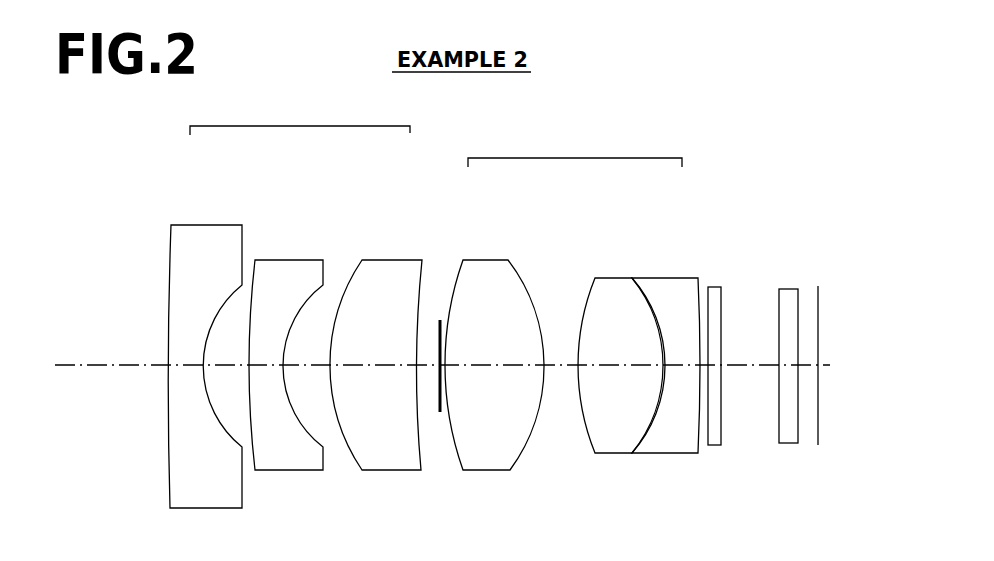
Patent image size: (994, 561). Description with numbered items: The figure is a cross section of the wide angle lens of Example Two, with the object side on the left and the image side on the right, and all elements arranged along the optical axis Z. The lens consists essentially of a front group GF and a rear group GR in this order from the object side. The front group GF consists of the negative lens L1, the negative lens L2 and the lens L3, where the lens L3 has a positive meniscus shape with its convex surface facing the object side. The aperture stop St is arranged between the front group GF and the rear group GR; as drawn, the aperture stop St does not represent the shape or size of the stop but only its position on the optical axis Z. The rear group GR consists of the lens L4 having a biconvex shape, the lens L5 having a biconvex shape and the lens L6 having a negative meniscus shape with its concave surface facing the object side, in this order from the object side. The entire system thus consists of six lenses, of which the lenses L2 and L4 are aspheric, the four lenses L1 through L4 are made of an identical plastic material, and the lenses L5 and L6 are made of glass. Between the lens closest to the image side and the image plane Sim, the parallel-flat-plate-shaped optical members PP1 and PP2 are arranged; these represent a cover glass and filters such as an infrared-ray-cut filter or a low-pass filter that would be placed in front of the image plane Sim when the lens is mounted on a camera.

The negative lens L1 is at (208, 235).
The negative lens L2 is at (290, 265).
The positive lens L3 is at (392, 267).
The lens L4 is at (487, 267).
The lens L5 is at (608, 285).
The lens L6 is at (663, 285).
The front group GF is at (300, 118).
The rear group GR is at (575, 152).
The aperture stop St is at (440, 322).
The parallel-flat-plate-shaped optical member PP1 is at (714, 295).
The parallel-flat-plate-shaped optical member PP2 is at (790, 296).
The image plane Sim is at (817, 446).
The optical axis Z is at (84, 362).